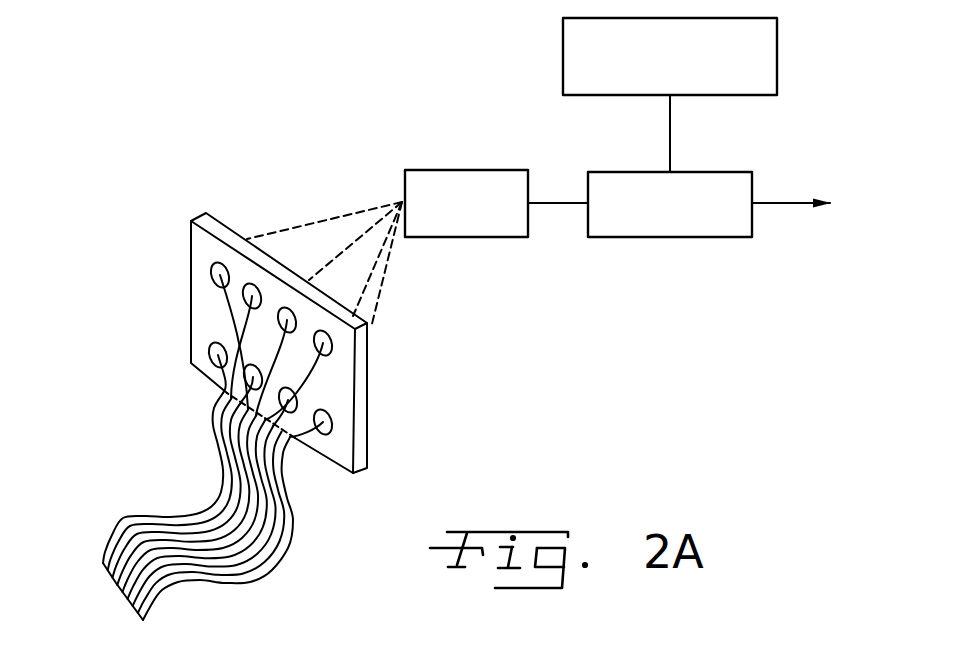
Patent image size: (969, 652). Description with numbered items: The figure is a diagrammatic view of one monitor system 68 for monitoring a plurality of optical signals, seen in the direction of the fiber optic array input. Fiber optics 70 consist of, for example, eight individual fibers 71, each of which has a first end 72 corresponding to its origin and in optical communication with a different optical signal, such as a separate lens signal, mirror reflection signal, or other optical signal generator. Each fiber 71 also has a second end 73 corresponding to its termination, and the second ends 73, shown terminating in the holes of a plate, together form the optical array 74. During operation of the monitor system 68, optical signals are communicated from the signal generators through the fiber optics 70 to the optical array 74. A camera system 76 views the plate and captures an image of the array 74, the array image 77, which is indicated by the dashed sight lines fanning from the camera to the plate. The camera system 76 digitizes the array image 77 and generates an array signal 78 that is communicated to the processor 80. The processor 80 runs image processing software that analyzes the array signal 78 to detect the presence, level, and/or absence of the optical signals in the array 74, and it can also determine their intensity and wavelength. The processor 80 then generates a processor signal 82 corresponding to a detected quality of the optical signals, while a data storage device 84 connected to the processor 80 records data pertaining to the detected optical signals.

The monitor system 68 is at (136, 318).
The fiber optics 70 is at (253, 580).
The fiber 71 is at (295, 528).
The first end 72 is at (110, 567).
The second end 73 is at (217, 360).
The optical array 74 is at (343, 436).
The camera system 76 is at (467, 170).
The array image 77 is at (333, 217).
The array signal 78 is at (561, 205).
The processor 80 is at (668, 237).
The processor signal 82 is at (790, 202).
The data storage device 84 is at (563, 45).